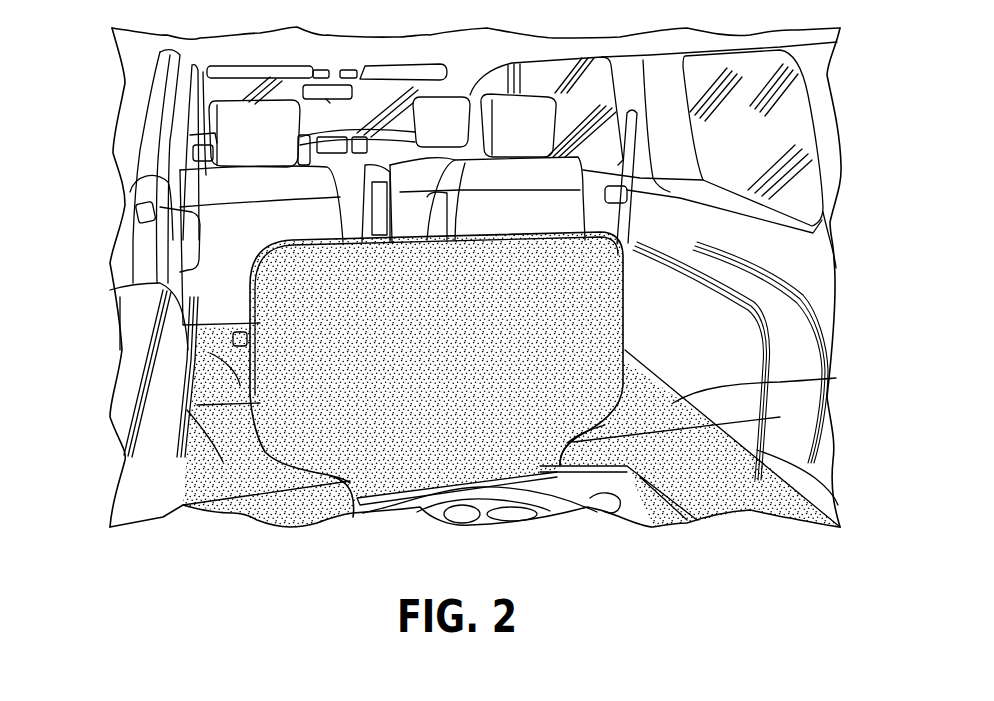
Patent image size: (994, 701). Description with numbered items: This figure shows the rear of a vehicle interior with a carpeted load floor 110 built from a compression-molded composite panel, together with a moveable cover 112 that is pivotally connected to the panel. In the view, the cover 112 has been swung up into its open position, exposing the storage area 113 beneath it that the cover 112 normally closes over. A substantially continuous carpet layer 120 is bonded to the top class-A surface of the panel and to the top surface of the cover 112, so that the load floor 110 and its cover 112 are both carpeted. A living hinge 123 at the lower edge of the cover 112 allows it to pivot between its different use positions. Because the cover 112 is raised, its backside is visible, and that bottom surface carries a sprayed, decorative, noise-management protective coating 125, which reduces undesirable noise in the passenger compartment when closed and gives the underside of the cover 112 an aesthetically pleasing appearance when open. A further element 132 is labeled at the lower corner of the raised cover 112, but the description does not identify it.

The load floor 110 is at (700, 318).
The cover 112 is at (549, 222).
The storage area 113 is at (603, 424).
The carpet layer 120 is at (220, 455).
The living hinge 123 is at (354, 512).
The protective coating 125 is at (590, 292).
The latch bracket 132 is at (603, 424).